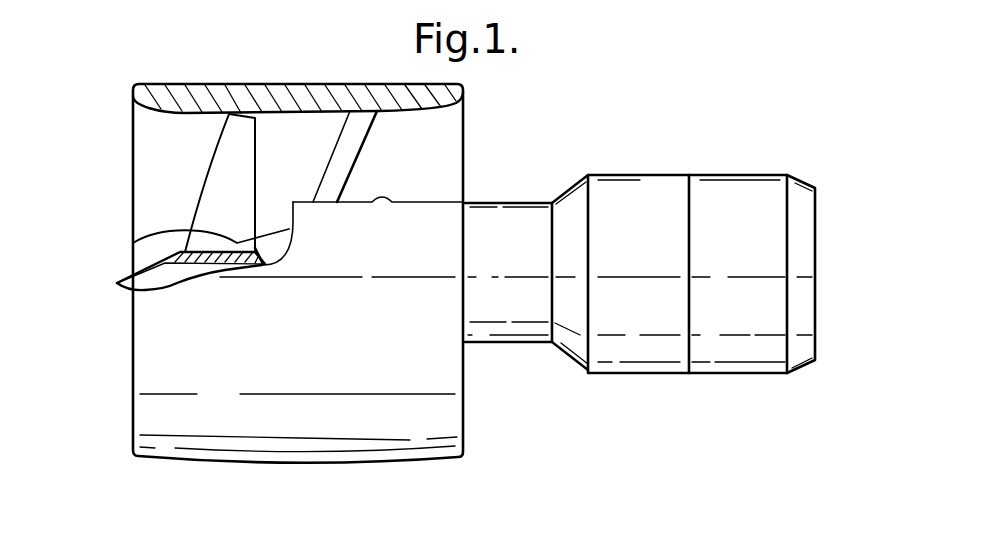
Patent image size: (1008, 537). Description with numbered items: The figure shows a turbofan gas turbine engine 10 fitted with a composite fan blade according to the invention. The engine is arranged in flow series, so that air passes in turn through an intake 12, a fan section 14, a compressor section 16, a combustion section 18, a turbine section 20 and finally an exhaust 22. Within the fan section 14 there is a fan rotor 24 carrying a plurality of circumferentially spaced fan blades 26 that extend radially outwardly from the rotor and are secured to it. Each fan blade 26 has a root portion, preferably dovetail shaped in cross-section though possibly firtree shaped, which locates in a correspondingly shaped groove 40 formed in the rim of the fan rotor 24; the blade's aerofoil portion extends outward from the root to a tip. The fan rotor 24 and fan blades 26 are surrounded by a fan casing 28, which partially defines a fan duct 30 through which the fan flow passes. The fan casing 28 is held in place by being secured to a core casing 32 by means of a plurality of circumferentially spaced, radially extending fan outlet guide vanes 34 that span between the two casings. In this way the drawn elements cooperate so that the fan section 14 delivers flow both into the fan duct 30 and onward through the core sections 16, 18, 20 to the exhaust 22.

The turbofan gas turbine engine 10 is at (528, 116).
The intake 12 is at (132, 192).
The fan section 14 is at (212, 428).
The compressor section 16 is at (520, 328).
The combustion section 18 is at (645, 345).
The turbine section 20 is at (745, 348).
The exhaust 22 is at (808, 341).
The fan rotor 24 is at (233, 267).
The fan blades 26 is at (228, 157).
The fan casing 28 is at (253, 96).
The fan duct 30 is at (298, 155).
The core casing 32 is at (393, 201).
The fan outlet guide vanes 34 is at (352, 135).
The groove 40 is at (133, 243).